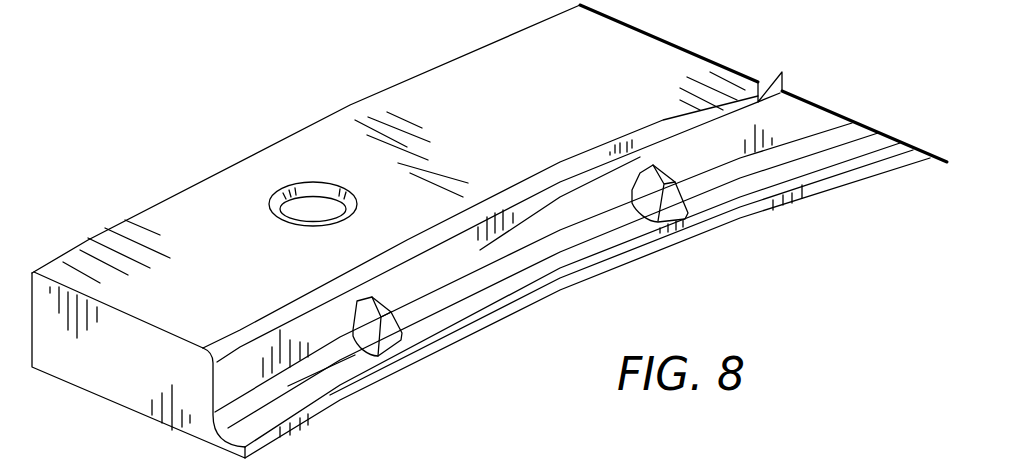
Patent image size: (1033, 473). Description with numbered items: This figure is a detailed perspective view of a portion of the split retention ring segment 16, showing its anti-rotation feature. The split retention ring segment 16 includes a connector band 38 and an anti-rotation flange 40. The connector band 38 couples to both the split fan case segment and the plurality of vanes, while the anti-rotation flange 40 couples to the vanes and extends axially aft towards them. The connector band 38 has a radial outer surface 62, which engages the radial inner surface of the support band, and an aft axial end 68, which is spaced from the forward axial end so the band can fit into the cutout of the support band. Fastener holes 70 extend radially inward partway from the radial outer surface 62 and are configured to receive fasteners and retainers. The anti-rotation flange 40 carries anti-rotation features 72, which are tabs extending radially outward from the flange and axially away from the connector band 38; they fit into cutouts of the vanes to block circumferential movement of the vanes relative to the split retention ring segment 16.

The split retention ring segment 16 is at (121, 52).
The connector band 38 is at (434, 118).
The anti-rotation flange 40 is at (514, 272).
The radial outer surface 62 is at (188, 252).
The aft axial end 68 is at (570, 192).
The fastener holes 70 is at (312, 205).
The anti-rotation features 72 is at (390, 335).